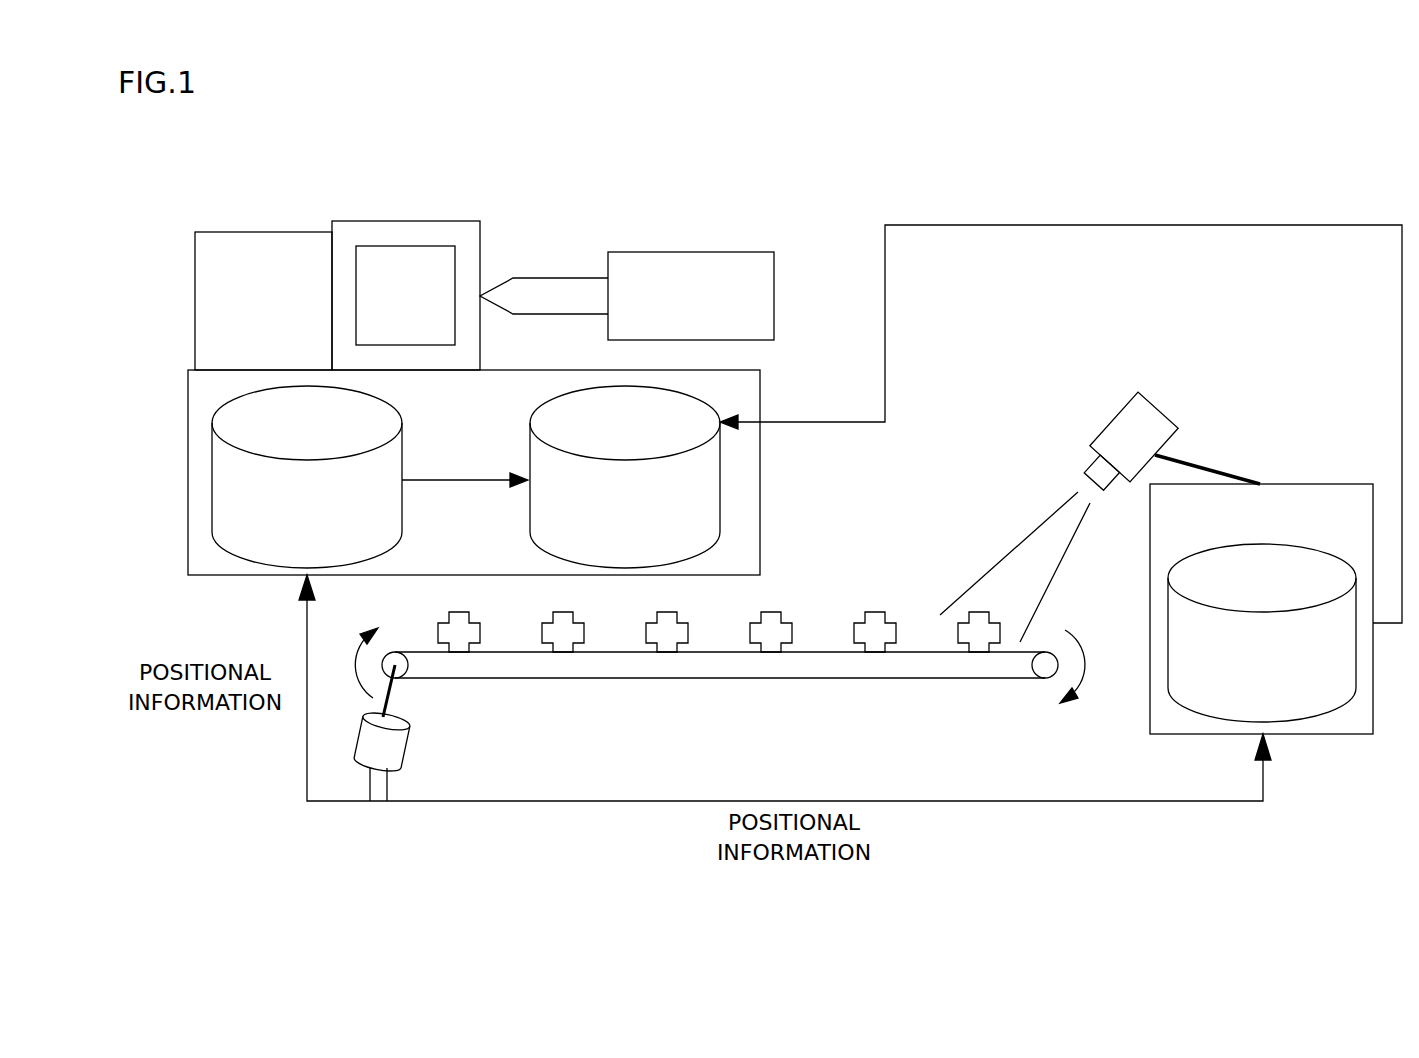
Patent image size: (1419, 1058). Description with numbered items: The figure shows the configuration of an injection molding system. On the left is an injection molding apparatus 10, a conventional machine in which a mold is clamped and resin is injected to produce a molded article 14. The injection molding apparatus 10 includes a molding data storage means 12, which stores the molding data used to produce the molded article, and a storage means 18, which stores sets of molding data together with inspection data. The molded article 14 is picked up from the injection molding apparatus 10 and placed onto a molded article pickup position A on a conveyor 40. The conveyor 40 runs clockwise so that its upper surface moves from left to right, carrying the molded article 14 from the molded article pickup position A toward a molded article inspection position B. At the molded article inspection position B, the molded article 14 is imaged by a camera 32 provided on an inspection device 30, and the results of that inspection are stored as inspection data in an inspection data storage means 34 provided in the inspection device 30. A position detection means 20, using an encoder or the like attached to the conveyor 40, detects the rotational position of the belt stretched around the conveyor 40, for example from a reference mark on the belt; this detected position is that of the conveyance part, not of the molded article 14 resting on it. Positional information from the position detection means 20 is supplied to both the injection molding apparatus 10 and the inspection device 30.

The injection molding apparatus 10 is at (692, 252).
The molding data storage means 12 is at (212, 478).
The molded article 14 is at (450, 614).
The storage means 18 is at (720, 458).
The position detection means 20 is at (410, 742).
The inspection device 30 is at (1330, 484).
The camera 32 is at (1162, 408).
The inspection data storage means 34 is at (1320, 712).
The conveyor 40 is at (728, 678).
The molded article pickup position A is at (482, 648).
The molded article inspection position B is at (958, 648).